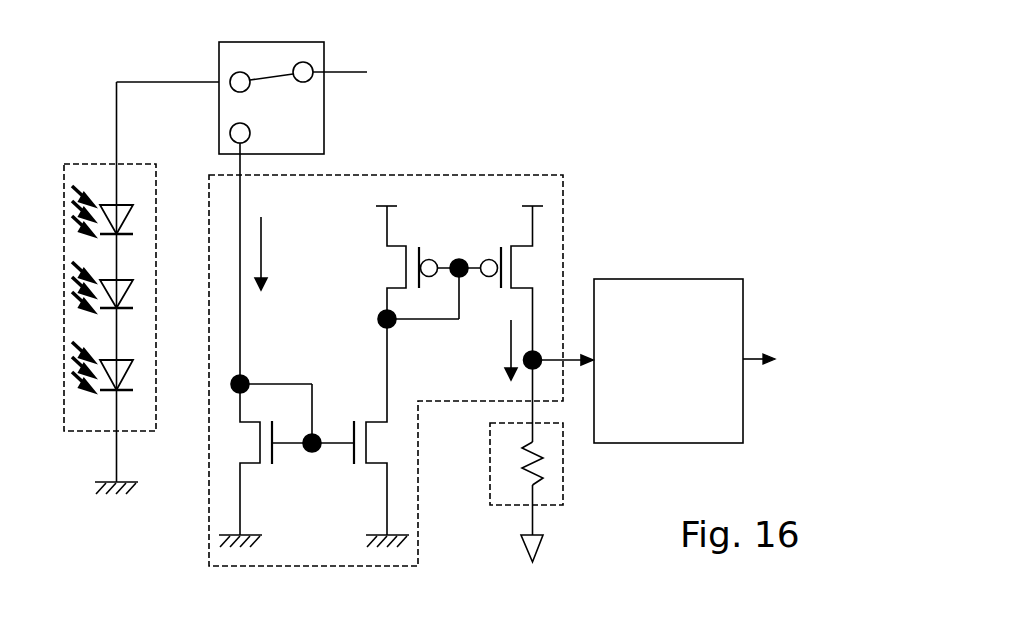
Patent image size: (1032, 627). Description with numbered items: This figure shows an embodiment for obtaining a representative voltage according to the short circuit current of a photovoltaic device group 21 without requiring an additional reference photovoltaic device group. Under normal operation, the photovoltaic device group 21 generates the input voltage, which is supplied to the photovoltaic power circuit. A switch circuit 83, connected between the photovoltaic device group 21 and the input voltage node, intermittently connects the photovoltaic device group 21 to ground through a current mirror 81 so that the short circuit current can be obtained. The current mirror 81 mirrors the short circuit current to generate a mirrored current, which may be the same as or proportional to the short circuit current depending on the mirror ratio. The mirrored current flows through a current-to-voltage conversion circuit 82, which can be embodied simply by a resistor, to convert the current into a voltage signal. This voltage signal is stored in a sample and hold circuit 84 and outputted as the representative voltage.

The photovoltaic device group 21 is at (108, 164).
The switch circuit 83 is at (324, 103).
The current mirror 81 is at (493, 175).
The current-to-voltage conversion circuit 82 is at (563, 463).
The sample and hold circuit 84 is at (741, 361).